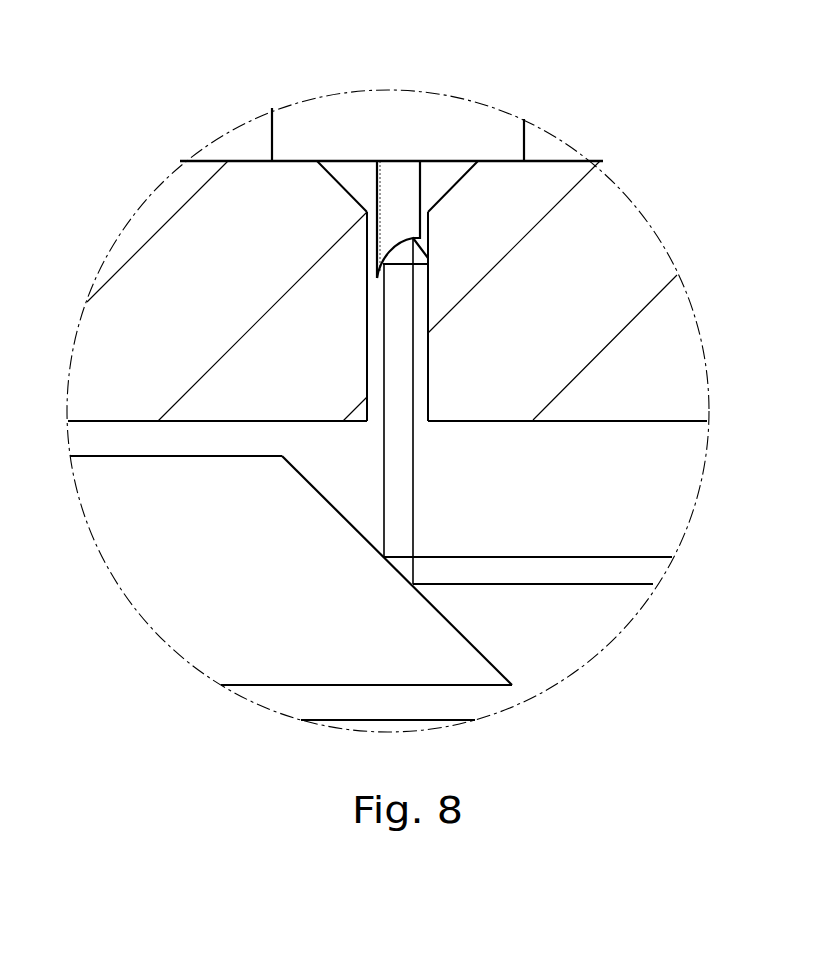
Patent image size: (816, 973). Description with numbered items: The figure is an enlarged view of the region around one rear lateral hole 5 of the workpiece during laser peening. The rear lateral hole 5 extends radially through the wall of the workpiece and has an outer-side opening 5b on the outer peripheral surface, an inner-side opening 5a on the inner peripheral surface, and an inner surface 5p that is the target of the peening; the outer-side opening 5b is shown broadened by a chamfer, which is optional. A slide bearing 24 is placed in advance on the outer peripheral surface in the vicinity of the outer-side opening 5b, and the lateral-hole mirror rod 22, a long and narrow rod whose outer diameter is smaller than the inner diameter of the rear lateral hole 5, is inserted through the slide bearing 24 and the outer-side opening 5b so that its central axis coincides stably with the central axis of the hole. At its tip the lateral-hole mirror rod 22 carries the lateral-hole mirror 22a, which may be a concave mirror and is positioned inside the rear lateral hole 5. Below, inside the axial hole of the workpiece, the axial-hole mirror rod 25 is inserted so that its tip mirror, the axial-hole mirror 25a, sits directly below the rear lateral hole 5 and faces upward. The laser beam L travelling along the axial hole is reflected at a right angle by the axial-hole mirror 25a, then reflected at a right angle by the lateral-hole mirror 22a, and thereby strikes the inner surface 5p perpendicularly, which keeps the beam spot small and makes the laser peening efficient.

The rear lateral hole 5 is at (382, 291).
The inner surface 5p is at (426, 284).
The outer-side opening 5b is at (347, 160).
The inner-side opening 5a is at (422, 422).
The slide bearing 24 is at (499, 128).
The lateral-hole mirror rod 22 is at (400, 192).
The lateral-hole mirror 22a is at (393, 250).
The laser beam L is at (600, 562).
The axial-hole mirror rod 25 is at (173, 613).
The axial-hole mirror 25a is at (478, 650).